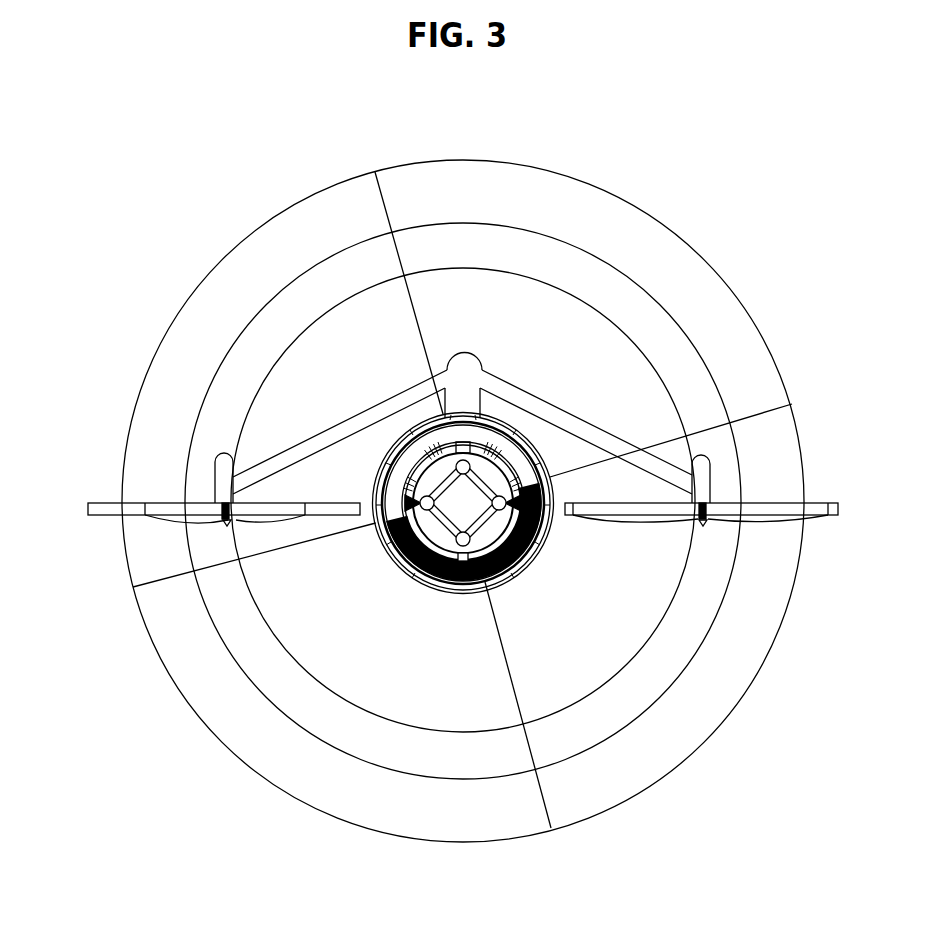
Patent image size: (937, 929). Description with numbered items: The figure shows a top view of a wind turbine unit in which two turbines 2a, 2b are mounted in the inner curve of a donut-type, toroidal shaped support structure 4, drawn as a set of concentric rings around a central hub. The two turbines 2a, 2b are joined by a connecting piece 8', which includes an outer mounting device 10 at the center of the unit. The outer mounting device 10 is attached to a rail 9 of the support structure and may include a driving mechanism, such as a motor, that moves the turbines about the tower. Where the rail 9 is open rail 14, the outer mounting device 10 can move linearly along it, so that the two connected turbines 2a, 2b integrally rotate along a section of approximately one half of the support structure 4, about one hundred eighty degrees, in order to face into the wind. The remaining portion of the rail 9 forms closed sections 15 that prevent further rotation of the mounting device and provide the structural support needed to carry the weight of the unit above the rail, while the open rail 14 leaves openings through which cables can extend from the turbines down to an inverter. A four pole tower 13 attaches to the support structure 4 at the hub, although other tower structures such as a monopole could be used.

The support structure 4 is at (663, 209).
The connecting piece 8' is at (308, 292).
The outer mounting device 10 is at (473, 354).
The open rail 14 is at (503, 447).
The four pole tower 13 is at (448, 523).
The rail 9 is at (392, 562).
The closed sections 15 is at (517, 572).
The turbine 2a is at (720, 480).
The turbine 2b is at (208, 484).